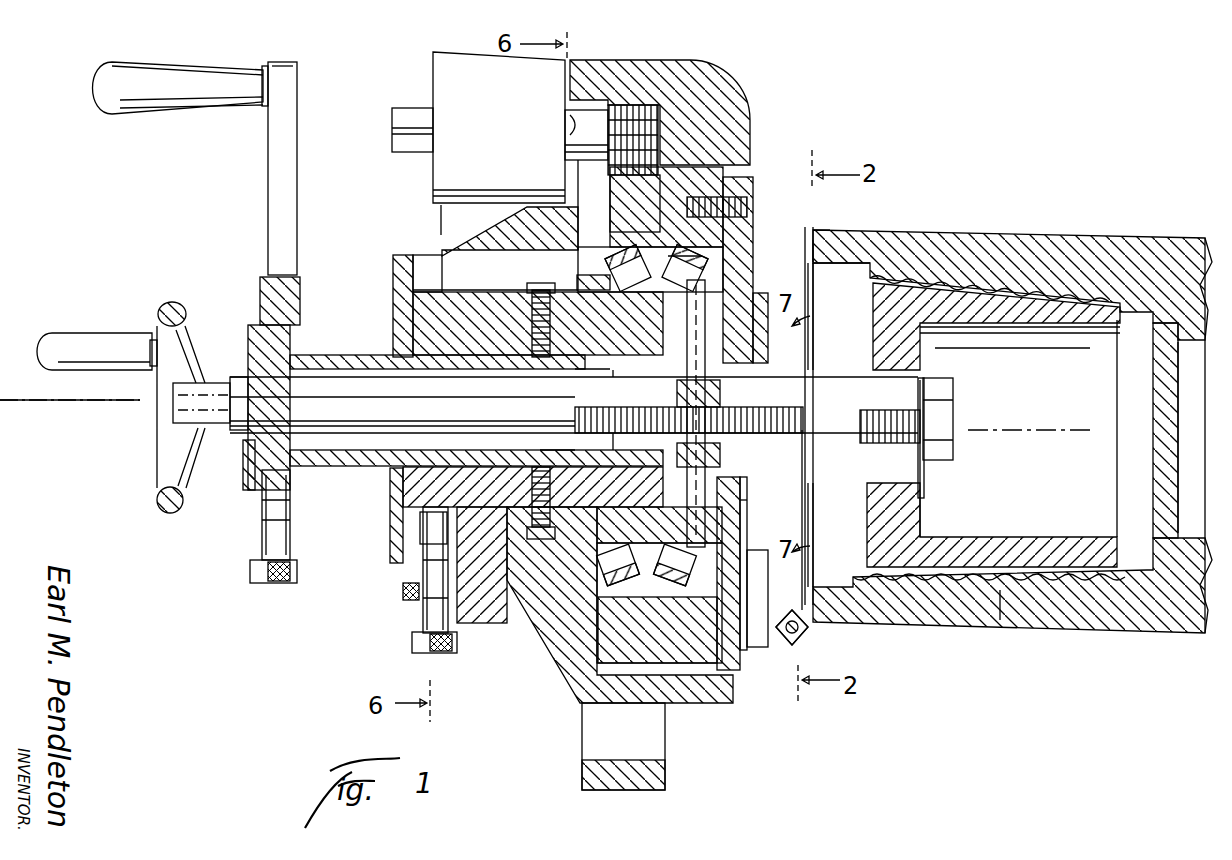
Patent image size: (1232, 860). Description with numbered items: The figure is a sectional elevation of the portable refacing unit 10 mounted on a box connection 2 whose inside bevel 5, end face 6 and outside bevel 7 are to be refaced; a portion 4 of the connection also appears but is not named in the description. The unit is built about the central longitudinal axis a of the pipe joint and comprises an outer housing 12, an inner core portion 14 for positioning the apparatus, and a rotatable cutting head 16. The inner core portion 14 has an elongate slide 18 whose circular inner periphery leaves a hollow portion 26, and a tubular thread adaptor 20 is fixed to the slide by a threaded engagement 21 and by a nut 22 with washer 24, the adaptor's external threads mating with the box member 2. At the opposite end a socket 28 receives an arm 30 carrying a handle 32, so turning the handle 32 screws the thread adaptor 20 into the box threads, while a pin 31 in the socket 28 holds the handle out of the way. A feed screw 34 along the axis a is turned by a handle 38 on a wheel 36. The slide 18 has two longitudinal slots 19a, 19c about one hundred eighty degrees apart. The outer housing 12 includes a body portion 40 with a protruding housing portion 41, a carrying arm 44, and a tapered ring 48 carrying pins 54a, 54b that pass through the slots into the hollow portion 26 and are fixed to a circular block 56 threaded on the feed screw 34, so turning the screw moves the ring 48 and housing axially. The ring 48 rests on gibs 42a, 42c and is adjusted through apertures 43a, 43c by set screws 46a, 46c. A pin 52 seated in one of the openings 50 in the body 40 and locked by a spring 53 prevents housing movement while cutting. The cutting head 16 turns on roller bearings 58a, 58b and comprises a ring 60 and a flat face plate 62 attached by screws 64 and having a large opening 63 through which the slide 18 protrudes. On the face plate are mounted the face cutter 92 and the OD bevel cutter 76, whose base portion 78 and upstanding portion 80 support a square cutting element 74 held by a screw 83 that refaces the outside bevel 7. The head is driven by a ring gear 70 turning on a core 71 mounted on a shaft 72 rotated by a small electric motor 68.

The box connection 2 is at (952, 628).
The housing wall 4 is at (1030, 600).
The inside bevel 5 is at (815, 285).
The end face 6 is at (812, 240).
The outside bevel 7 is at (815, 230).
The portable refacing unit 10 is at (272, 607).
The outer housing 12 is at (520, 650).
The inner core portion 14 is at (330, 470).
The rotatable cutting head 16 is at (752, 180).
The slide 18 is at (330, 352).
The slot 19a is at (640, 370).
The slot 19c is at (640, 463).
The thread adaptor 20 is at (992, 443).
The threaded engagement 21 is at (1025, 285).
The nut 22 is at (945, 405).
The washer 24 is at (940, 380).
The hollow portion 26 is at (574, 405).
The socket 28 is at (262, 462).
The arm 30 is at (268, 162).
The pin 31 is at (265, 540).
The handle 32 is at (165, 102).
The feed screw 34 is at (525, 425).
The wheel 36 is at (157, 488).
The handle 38 is at (92, 333).
The body portion 40 is at (472, 630).
The protruding housing portion 41 is at (725, 85).
The gib 42a is at (395, 338).
The gib 42c is at (395, 492).
The aperture 43a is at (548, 370).
The aperture 43c is at (538, 460).
The carrying arm 44 is at (612, 790).
The set screw 46a is at (542, 286).
The set screw 46c is at (541, 540).
The tapered ring 48 is at (590, 562).
The openings 50 is at (428, 528).
The pin 52 is at (432, 605).
The spring 53 is at (410, 588).
The pin 54a is at (720, 394).
The pin 54b is at (720, 451).
The circular block 56 is at (680, 447).
The roller bearing 58a is at (625, 255).
The roller bearing 58b is at (705, 262).
The ring 60 is at (625, 190).
The face plate member 62 is at (730, 655).
The opening 63 is at (735, 503).
The screws 64 is at (755, 195).
The electric motor 68 is at (478, 143).
The ring gear 70 is at (633, 105).
The core 71 is at (580, 137).
The shaft 72 is at (565, 118).
The cutting element 74 is at (810, 634).
The OD bevel cutter 76 is at (805, 645).
The base portion 78 is at (760, 565).
The upstanding portion 80 is at (800, 650).
The screw 83 is at (800, 612).
The face cutter 92 is at (815, 315).
The central longitudinal axis a is at (1036, 432).